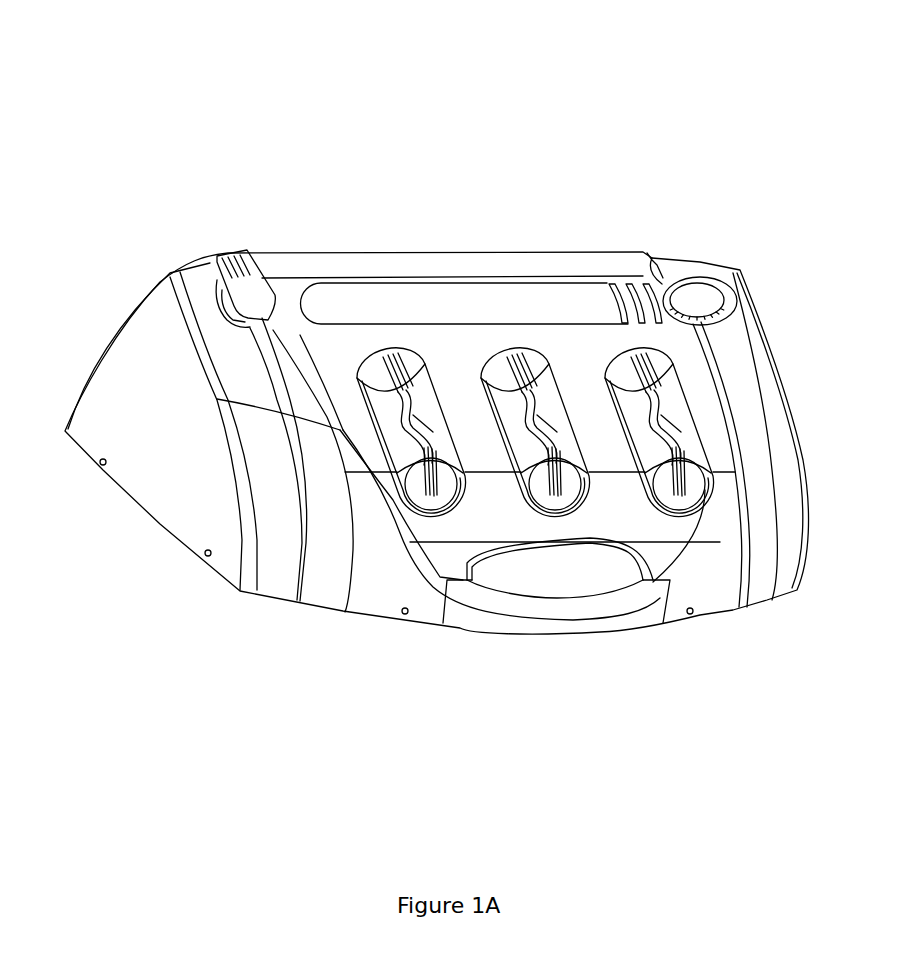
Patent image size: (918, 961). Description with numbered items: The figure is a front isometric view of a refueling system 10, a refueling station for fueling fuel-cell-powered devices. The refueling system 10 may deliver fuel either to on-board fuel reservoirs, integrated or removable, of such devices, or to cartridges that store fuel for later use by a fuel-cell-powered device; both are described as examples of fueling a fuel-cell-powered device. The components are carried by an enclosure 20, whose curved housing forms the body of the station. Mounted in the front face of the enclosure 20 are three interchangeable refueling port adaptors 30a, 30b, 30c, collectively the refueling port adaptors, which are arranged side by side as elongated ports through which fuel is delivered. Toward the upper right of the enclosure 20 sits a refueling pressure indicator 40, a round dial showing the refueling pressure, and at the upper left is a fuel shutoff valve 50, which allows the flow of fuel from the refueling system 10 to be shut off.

The refueling system 10 is at (481, 145).
The enclosure 20 is at (372, 557).
The refueling port adaptor 30a is at (440, 500).
The refueling port adaptor 30b is at (557, 502).
The refueling port adaptor 30c is at (680, 503).
The refueling pressure indicator 40 is at (683, 298).
The fuel shutoff valve 50 is at (250, 270).